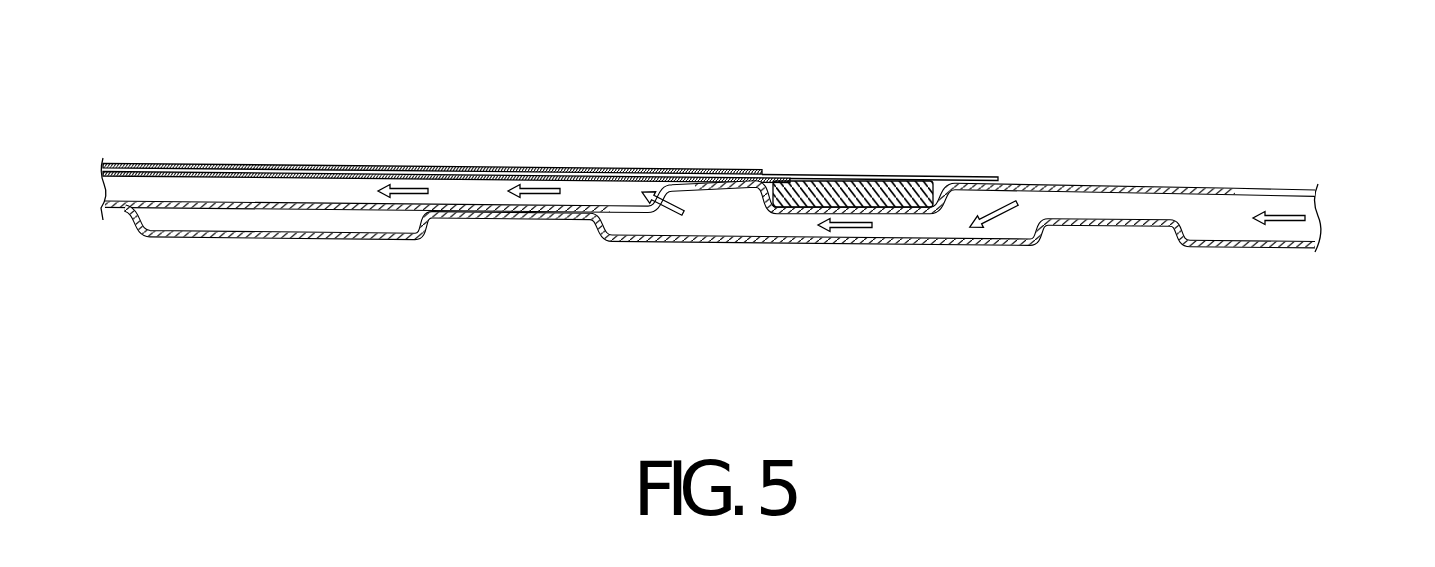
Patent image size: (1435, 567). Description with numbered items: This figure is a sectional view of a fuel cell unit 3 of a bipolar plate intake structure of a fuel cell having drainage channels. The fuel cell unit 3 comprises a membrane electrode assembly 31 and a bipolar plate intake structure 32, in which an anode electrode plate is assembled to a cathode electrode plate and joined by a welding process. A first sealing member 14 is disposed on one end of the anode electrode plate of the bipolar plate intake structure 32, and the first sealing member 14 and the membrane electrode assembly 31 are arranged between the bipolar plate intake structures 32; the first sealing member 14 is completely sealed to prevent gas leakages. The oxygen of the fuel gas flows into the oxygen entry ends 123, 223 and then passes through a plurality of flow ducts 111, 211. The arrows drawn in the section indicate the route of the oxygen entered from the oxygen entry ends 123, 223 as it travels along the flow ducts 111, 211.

The fuel cell unit 3 is at (104, 124).
The membrane electrode assembly 31 is at (594, 178).
The bipolar plate intake structure 32 is at (105, 214).
The first sealing member 14 is at (877, 188).
The flow duct 111 is at (720, 276).
The flow duct 211 is at (748, 230).
The oxygen entry end 123 is at (1189, 150).
The oxygen entry end 223 is at (1315, 220).